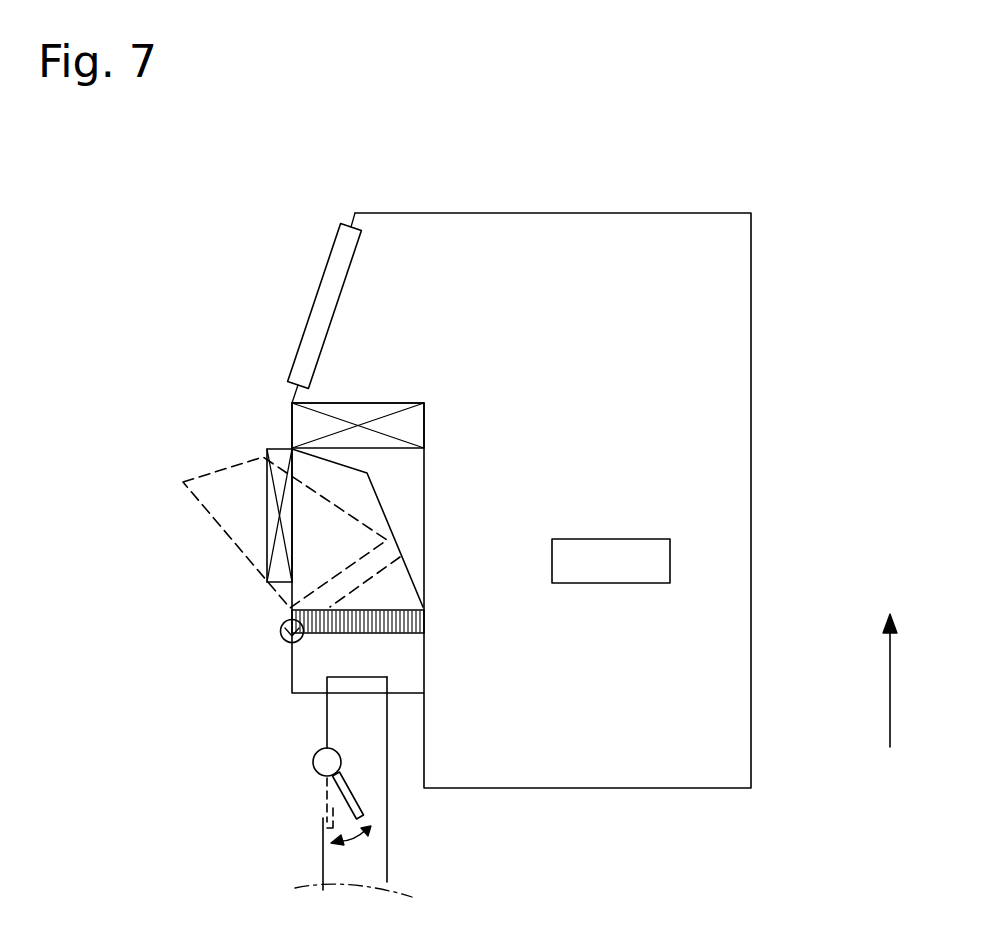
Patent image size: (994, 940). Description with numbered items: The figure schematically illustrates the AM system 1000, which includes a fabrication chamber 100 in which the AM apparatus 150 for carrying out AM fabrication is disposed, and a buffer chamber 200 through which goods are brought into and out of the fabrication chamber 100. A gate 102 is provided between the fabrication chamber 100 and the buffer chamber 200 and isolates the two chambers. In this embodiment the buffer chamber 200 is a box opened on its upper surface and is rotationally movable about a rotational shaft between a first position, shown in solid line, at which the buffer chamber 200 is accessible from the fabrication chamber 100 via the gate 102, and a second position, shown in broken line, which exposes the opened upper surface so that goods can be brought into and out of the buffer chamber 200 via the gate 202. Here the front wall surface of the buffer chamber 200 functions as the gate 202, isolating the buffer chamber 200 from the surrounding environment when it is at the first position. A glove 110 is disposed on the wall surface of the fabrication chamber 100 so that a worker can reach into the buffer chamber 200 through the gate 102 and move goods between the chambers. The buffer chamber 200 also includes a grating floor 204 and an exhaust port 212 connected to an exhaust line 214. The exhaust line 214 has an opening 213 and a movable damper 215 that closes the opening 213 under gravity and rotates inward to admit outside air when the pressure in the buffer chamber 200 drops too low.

The AM system 1000 is at (165, 183).
The fabrication chamber 100 is at (542, 263).
The glove 110 is at (328, 295).
The gate 102 is at (318, 425).
The gate 202 is at (265, 455).
The buffer chamber 200 is at (337, 515).
The grating floor 204 is at (383, 630).
The exhaust port 212 is at (377, 685).
The opening 213 is at (311, 800).
The exhaust line 214 is at (370, 770).
The movable damper 215 is at (357, 807).
The AM apparatus 150 is at (670, 570).